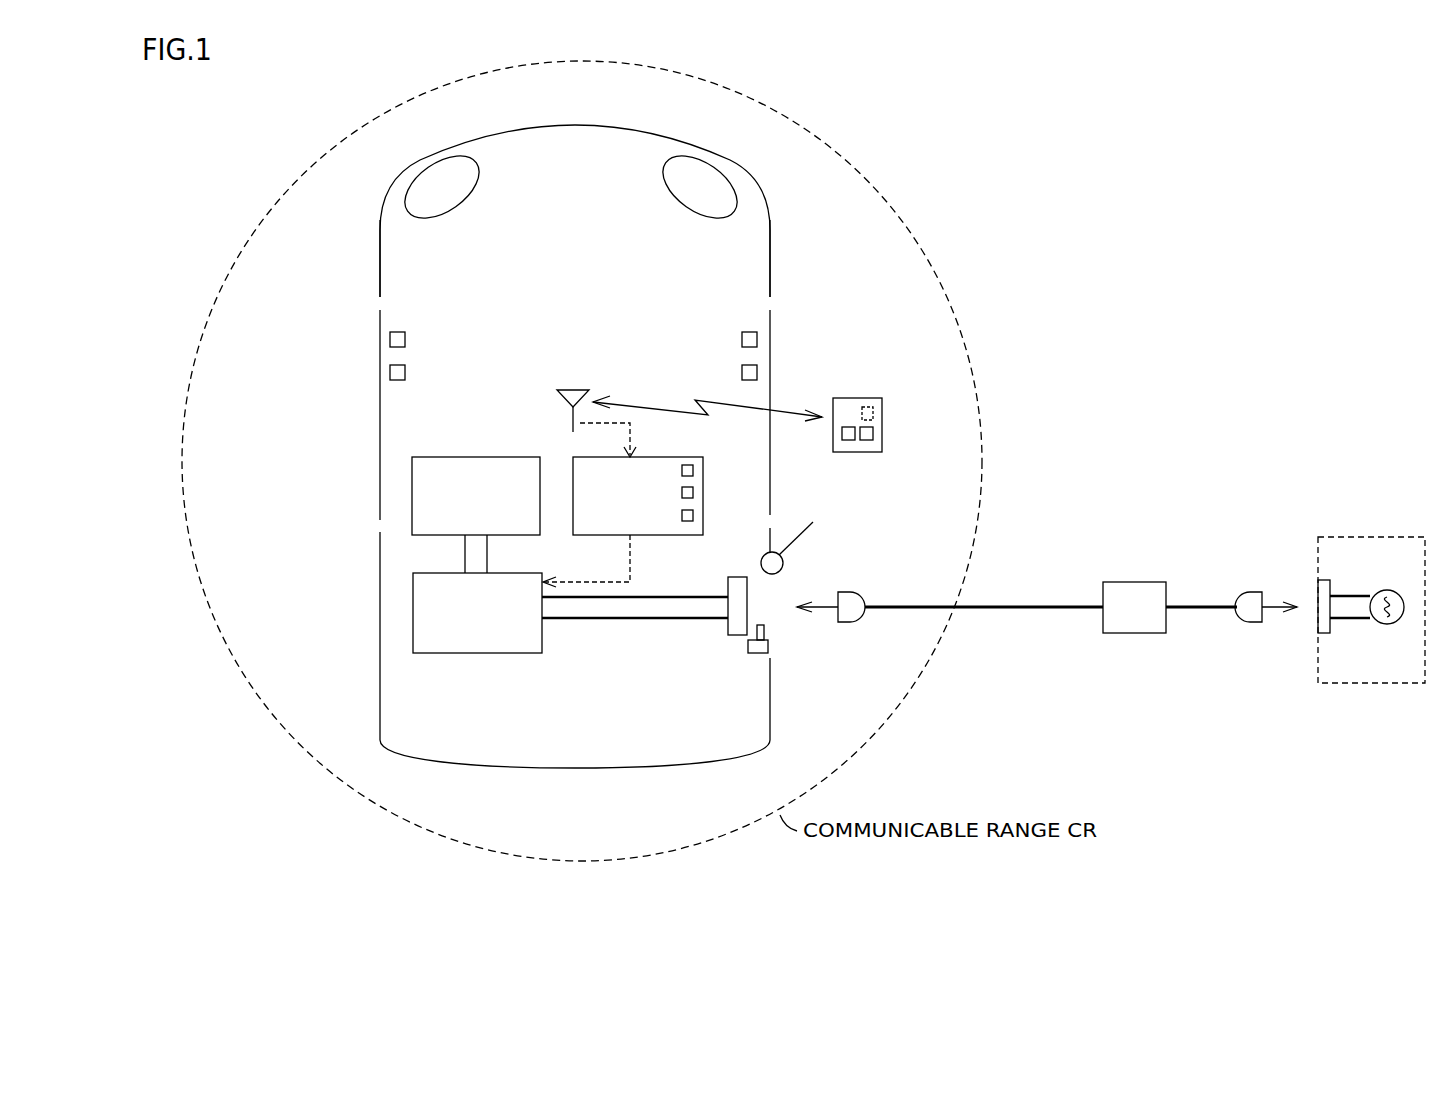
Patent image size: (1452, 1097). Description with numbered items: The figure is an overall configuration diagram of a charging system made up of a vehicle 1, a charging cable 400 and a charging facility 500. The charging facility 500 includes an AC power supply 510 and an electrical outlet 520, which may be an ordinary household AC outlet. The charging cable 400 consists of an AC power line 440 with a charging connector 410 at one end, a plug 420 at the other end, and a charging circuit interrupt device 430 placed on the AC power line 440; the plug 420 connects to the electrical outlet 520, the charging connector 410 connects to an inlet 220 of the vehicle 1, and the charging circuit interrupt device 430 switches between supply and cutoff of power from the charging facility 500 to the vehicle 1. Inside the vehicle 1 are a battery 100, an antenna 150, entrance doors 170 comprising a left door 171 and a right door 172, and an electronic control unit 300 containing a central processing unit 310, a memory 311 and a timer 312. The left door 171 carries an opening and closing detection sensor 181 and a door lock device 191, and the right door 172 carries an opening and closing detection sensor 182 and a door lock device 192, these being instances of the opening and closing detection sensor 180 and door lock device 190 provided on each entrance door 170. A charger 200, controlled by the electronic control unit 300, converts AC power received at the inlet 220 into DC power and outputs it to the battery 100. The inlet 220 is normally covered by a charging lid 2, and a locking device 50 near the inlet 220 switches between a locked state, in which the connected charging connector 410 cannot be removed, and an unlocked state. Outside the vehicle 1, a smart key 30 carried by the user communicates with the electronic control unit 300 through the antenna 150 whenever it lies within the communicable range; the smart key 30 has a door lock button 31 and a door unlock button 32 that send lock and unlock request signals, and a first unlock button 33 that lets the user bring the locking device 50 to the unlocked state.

The vehicle 1 is at (554, 126).
The charging lid 2 is at (811, 520).
The smart key 30 is at (868, 397).
The door lock button 31 is at (848, 441).
The door unlock button 32 is at (866, 441).
The first unlock button 33 is at (875, 415).
The locking device 50 is at (746, 647).
The battery 100 is at (445, 455).
The antenna 150 is at (573, 388).
The entrance doors 170 is at (577, 386).
The left door 171 is at (379, 390).
The right door 172 is at (772, 390).
The opening and closing detection sensor 180 is at (573, 340).
The opening and closing detection sensor 181 is at (406, 340).
The opening and closing detection sensor 182 is at (741, 340).
The door lock device 190 is at (573, 373).
The door lock device 191 is at (406, 373).
The door lock device 192 is at (741, 373).
The charger 200 is at (472, 655).
The inlet 220 is at (737, 577).
The electronic control unit 300 is at (682, 540).
The central processing unit 310 is at (694, 470).
The memory 311 is at (694, 492).
The timer 312 is at (694, 515).
The charging cable 400 is at (1045, 627).
The charging connector 410 is at (843, 590).
The plug 420 is at (1253, 590).
The charging circuit interrupt device 430 is at (1137, 582).
The AC power line 440 is at (1070, 604).
The charging facility 500 is at (1318, 672).
The AC power supply 510 is at (1385, 625).
The electrical outlet 520 is at (1326, 578).